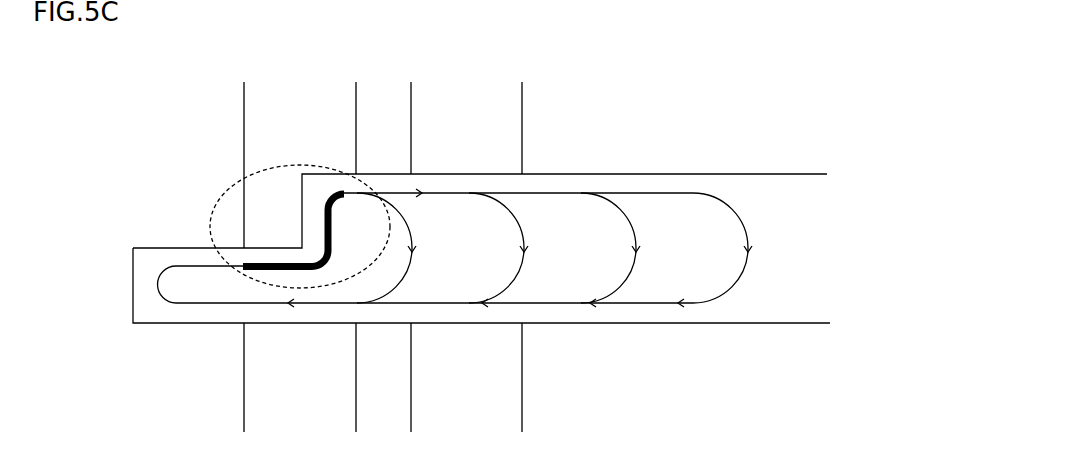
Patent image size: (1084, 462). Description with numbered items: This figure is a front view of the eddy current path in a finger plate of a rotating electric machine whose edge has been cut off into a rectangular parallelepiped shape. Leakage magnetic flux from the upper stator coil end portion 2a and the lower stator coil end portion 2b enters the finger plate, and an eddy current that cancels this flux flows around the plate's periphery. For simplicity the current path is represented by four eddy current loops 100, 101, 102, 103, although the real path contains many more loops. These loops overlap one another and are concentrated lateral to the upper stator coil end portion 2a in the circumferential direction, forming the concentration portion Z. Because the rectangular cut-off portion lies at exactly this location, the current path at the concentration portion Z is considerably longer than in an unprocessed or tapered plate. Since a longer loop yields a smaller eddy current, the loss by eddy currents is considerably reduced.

The concentration portion z is at (232, 182).
The upper stator coil end portion 2a is at (312, 130).
The lower stator coil end portion 2b is at (468, 123).
The eddy current loop 100 is at (731, 207).
The eddy current loop 101 is at (624, 213).
The eddy current loop 102 is at (517, 221).
The eddy current loop 103 is at (405, 277).